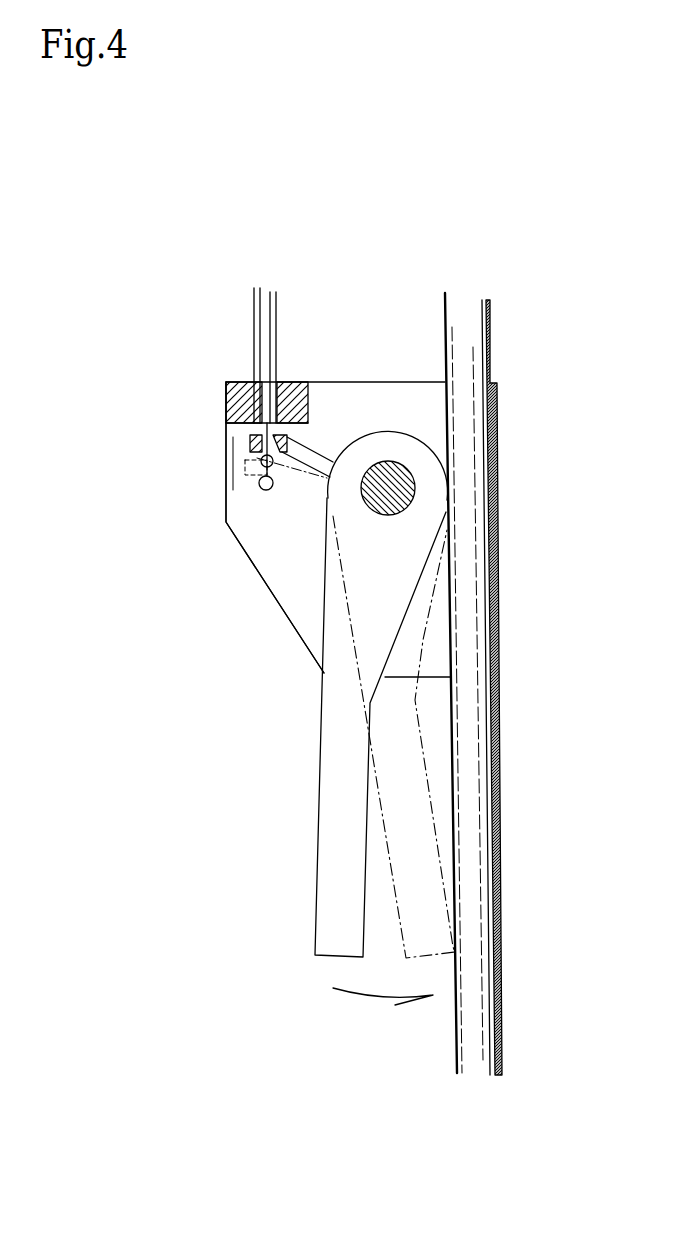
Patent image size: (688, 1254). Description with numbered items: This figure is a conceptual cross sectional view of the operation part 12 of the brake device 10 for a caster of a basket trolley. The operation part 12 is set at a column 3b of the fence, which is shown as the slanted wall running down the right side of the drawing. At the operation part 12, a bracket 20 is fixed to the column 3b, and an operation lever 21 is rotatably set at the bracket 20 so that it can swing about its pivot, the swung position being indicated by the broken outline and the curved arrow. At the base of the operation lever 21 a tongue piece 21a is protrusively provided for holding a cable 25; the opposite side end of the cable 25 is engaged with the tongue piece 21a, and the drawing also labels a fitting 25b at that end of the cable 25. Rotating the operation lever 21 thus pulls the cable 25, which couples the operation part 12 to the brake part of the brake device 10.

The brake device 10 is at (267, 567).
The operation part 12 is at (275, 527).
The bracket 20 is at (390, 405).
The operation lever 21 is at (330, 895).
The tongue piece 21a is at (306, 452).
The cable 25 is at (263, 323).
The ball joint 25b is at (268, 430).
The column 3b is at (475, 760).